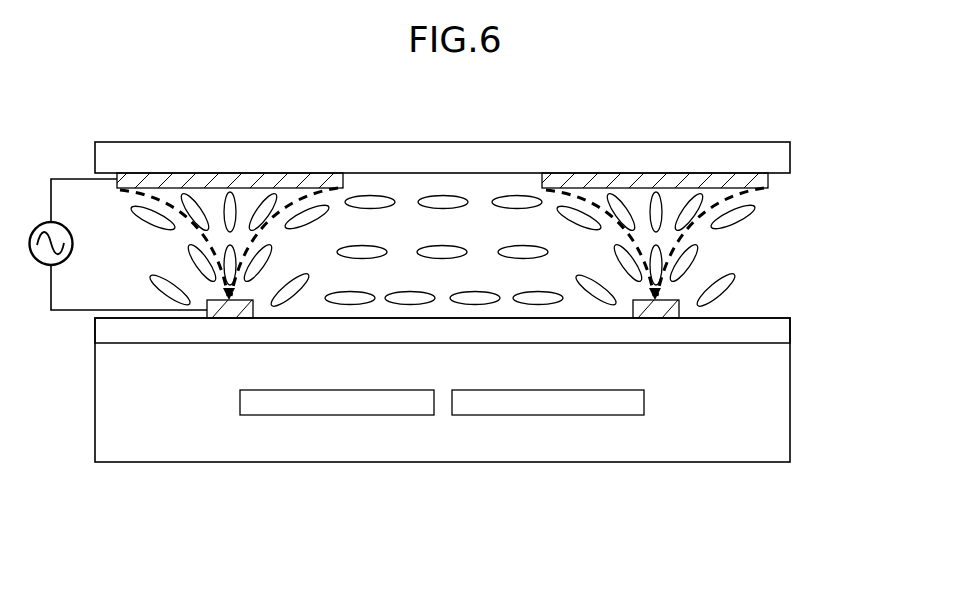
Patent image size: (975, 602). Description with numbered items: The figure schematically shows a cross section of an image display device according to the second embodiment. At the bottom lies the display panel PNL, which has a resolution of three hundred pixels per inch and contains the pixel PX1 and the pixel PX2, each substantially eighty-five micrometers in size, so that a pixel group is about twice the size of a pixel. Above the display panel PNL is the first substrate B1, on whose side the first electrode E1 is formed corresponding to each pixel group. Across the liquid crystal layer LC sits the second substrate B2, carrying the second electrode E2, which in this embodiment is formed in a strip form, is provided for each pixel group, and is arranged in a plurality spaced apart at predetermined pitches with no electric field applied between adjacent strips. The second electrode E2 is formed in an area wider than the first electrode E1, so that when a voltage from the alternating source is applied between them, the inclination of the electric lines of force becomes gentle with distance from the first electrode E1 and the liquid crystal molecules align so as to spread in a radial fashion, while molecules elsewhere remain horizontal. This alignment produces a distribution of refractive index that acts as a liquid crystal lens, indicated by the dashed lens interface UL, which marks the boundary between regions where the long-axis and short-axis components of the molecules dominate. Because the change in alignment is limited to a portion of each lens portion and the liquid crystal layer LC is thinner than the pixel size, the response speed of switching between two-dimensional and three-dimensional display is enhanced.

The second substrate B2 is at (777, 157).
The second electrode E2 is at (762, 180).
The lens interface UL is at (598, 200).
The liquid crystal layer LC is at (777, 260).
The first electrode E1 is at (668, 313).
The first substrate B1 is at (775, 329).
The display panel PNL is at (775, 400).
The pixel PX1 is at (337, 405).
The pixel PX2 is at (550, 405).